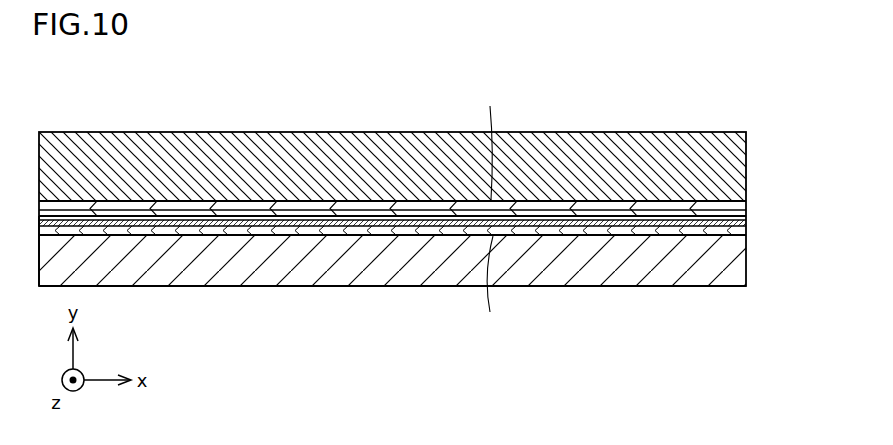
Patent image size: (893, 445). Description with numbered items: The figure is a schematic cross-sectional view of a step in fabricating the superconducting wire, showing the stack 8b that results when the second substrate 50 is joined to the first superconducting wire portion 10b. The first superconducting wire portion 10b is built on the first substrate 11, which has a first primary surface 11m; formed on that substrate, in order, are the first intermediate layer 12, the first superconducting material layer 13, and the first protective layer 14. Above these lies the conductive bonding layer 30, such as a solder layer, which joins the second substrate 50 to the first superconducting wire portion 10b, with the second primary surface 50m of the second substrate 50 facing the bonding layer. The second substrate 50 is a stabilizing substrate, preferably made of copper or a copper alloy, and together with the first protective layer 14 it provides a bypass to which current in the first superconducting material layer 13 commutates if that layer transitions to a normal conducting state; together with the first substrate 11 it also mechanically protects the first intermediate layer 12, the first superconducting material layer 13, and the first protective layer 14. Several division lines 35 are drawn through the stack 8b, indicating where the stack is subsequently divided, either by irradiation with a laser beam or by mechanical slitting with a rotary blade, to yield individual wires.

The stack 8b is at (849, 147).
The second substrate 50 is at (707, 168).
The conductive bonding layer 30 is at (703, 207).
The first protective layer 14 is at (683, 217).
The first superconducting material layer 13 is at (673, 223).
The first intermediate layer 12 is at (665, 225).
The first substrate 11 is at (648, 267).
The first superconducting wire portion 10b is at (795, 242).
The division line 35 is at (216, 328).
The second primary surface 50m is at (492, 141).
The first primary surface 11m is at (493, 285).